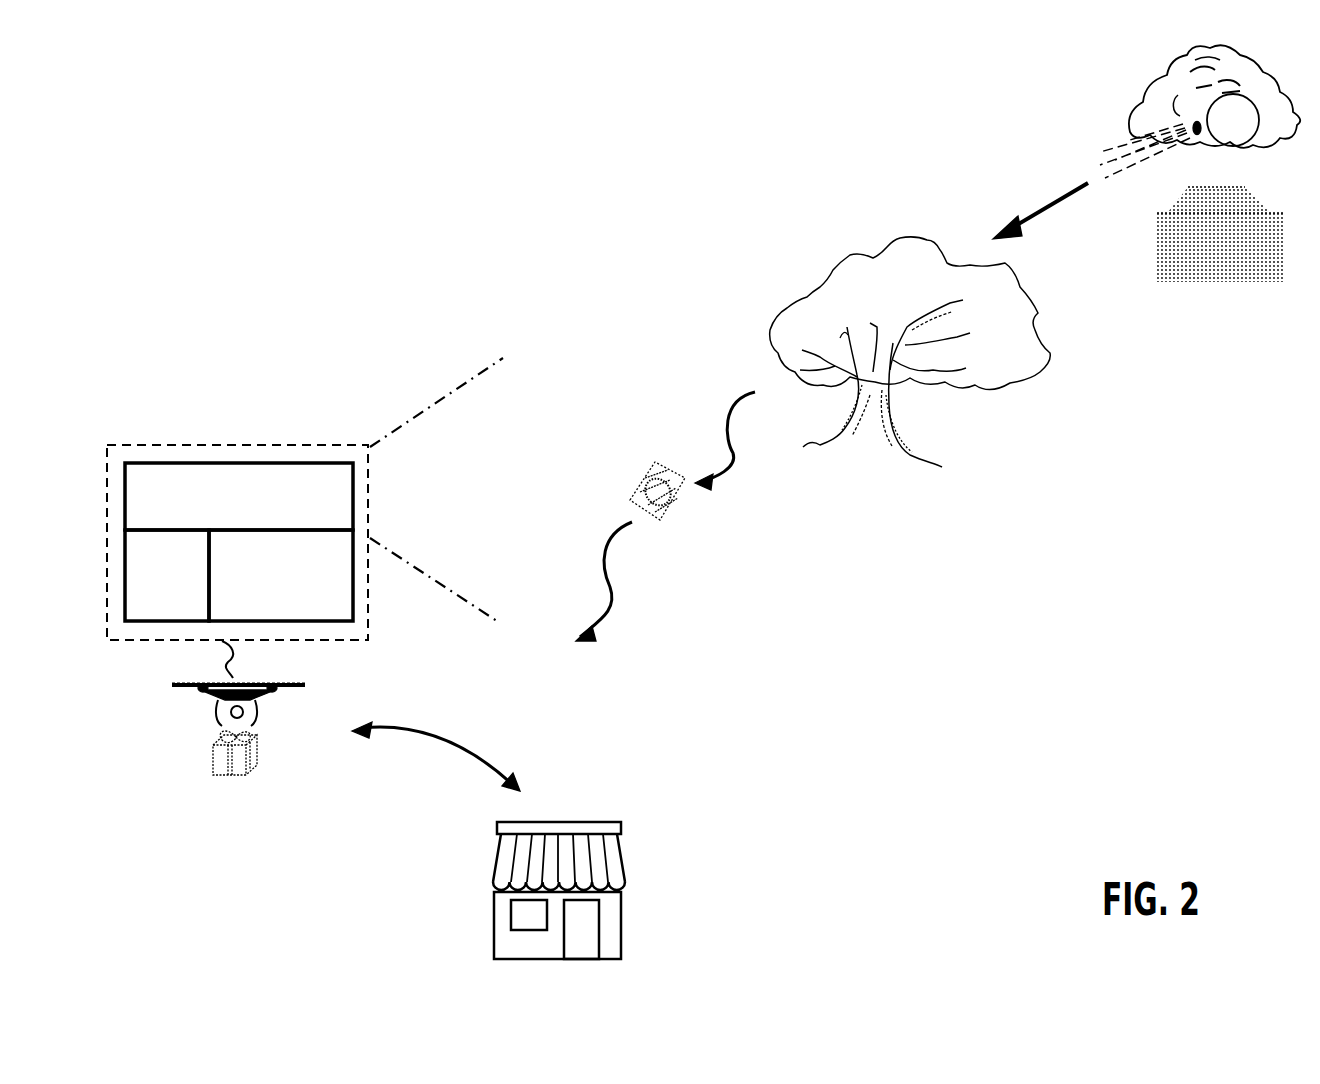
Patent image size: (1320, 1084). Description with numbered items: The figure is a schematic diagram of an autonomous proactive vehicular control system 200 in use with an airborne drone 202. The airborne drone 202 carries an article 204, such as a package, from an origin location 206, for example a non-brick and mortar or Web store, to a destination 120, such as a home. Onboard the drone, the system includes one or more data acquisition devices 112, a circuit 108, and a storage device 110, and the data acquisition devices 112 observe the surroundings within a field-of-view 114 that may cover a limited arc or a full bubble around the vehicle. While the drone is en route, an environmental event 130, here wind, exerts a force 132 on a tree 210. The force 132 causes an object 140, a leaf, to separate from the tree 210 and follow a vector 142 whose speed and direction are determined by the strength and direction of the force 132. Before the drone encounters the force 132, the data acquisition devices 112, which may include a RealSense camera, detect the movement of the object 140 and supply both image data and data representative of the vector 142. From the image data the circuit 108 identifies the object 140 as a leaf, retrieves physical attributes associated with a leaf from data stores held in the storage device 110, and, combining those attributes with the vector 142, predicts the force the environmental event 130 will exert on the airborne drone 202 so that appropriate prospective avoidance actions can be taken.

The autonomous proactive vehicular control system 200 is at (229, 89).
The circuit 108 is at (167, 575).
The storage device 110 is at (281, 575).
The data acquisition devices 112 is at (239, 496).
The field-of-view 114 is at (440, 490).
The destination 120 is at (1219, 292).
The environmental event 130 is at (1135, 92).
The force 132 is at (1016, 210).
The object 140 is at (655, 472).
The vector 142 is at (612, 582).
The airborne drone 202 is at (265, 712).
The article 204 is at (201, 765).
The origin location 206 is at (637, 874).
The tree 210 is at (768, 318).